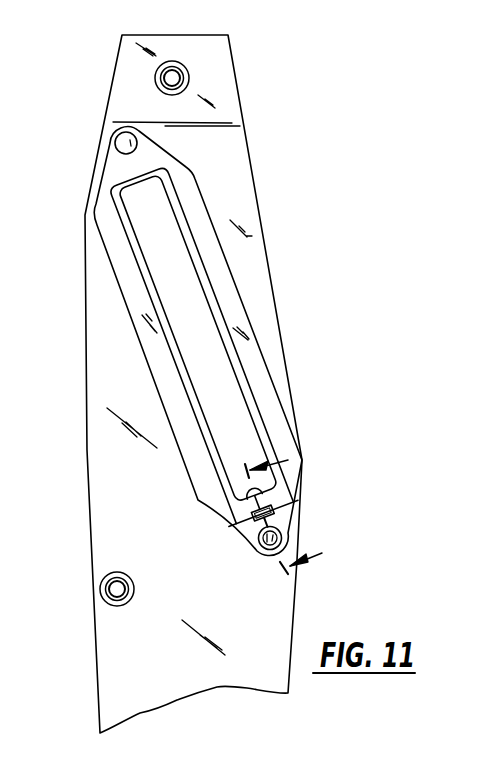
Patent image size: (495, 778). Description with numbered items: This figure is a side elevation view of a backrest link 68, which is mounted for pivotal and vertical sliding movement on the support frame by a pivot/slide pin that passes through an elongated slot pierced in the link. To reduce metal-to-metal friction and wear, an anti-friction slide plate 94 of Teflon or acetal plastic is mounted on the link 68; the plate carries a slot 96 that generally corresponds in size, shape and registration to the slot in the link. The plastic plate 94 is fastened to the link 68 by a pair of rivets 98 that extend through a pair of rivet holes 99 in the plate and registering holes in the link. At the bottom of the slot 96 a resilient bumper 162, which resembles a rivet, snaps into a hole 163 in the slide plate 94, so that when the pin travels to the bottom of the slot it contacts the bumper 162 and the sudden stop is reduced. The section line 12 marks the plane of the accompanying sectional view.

The backrest link 68 is at (85, 256).
The anti-friction slide plate 94 is at (180, 204).
The slot 96 is at (160, 288).
The rivets 98 is at (122, 143).
The rivet holes 99 is at (276, 517).
The resilient bumper 162 is at (262, 490).
The hole 163 is at (274, 510).
The section line 12- 12 is at (282, 513).